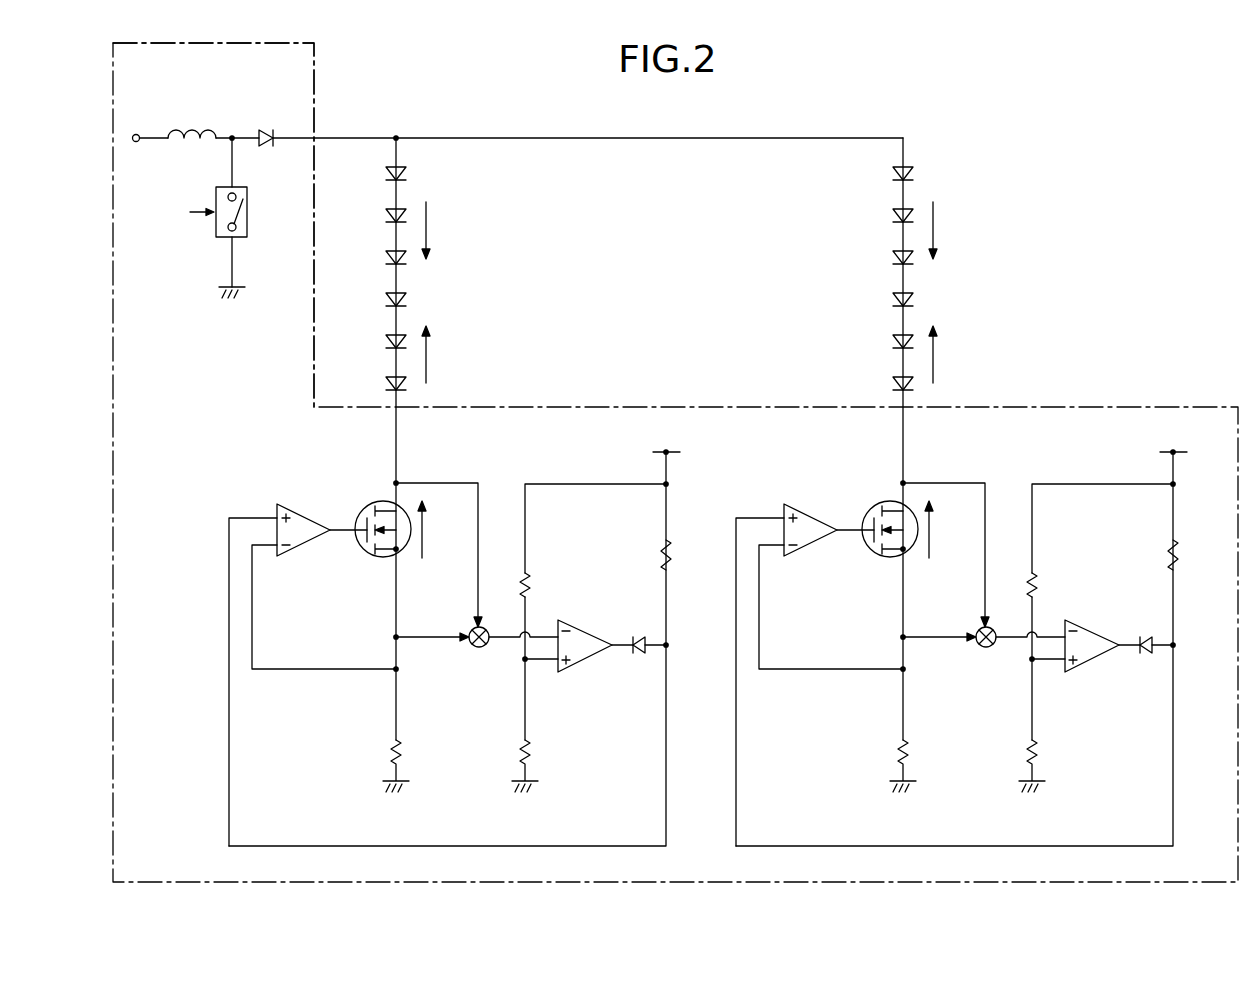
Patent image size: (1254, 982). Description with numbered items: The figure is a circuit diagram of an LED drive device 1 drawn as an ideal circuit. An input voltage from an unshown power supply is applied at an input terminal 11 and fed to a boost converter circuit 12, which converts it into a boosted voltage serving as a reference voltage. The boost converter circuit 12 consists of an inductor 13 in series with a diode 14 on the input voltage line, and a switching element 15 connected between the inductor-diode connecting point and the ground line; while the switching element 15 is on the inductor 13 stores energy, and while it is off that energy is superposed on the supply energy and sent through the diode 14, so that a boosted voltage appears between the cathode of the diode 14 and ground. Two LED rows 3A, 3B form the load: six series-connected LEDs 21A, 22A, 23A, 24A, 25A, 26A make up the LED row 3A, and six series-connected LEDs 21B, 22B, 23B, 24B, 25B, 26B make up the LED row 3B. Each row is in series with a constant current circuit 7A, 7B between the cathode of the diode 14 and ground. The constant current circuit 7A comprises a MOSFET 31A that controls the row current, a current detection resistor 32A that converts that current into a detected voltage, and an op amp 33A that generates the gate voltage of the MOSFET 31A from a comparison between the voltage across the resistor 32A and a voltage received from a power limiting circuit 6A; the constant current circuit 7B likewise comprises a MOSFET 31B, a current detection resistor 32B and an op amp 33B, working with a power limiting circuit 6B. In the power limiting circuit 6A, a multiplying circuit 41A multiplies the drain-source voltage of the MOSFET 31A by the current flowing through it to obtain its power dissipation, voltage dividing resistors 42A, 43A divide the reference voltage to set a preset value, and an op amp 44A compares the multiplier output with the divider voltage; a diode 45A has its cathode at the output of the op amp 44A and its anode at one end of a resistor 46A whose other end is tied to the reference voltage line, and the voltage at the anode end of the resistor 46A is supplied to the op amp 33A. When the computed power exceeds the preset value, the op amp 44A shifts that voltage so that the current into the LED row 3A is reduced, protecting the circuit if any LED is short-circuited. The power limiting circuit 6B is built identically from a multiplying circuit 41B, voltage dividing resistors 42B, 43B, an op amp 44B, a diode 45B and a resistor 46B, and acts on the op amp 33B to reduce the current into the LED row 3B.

The LED drive device 1 is at (1131, 407).
The input terminal 11 is at (138, 134).
The boost converter circuit 12 is at (245, 101).
The inductor 13 is at (190, 130).
The diode 14 is at (269, 130).
The switching element 15 is at (250, 236).
The LED row 3A is at (399, 439).
The LED row 3B is at (906, 439).
The LED 21A is at (386, 180).
The LED 22A is at (386, 222).
The LED 23A is at (386, 264).
The LED 24A is at (386, 306).
The LED 25A is at (386, 348).
The LED 26A is at (386, 390).
The LED 21B is at (871, 168).
The LED 22B is at (871, 210).
The LED 23B is at (871, 252).
The LED 24B is at (871, 294).
The LED 25B is at (871, 336).
The LED 26B is at (871, 378).
The constant current circuit 7A is at (352, 645).
The constant current circuit 7B is at (859, 645).
The MOSFET 31A is at (370, 559).
The MOSFET 31B is at (880, 554).
The current detection resistor 32A is at (389, 750).
The current detection resistor 32B is at (873, 759).
The op amp 33A is at (304, 511).
The op amp 33B is at (829, 510).
The power limiting circuit 6A is at (472, 635).
The power limiting circuit 6B is at (979, 635).
The multiplying circuit 41A is at (480, 648).
The multiplying circuit 41B is at (993, 661).
The voltage dividing resistor 42A is at (530, 573).
The voltage dividing resistor 42B is at (1055, 565).
The voltage dividing resistor 43A is at (532, 749).
The voltage dividing resistor 43B is at (1062, 759).
The op amp 44A is at (572, 620).
The op amp 44B is at (1102, 626).
The diode 45A is at (637, 630).
The diode 45B is at (1150, 623).
The resistor 46A is at (672, 542).
The resistor 46B is at (1195, 526).